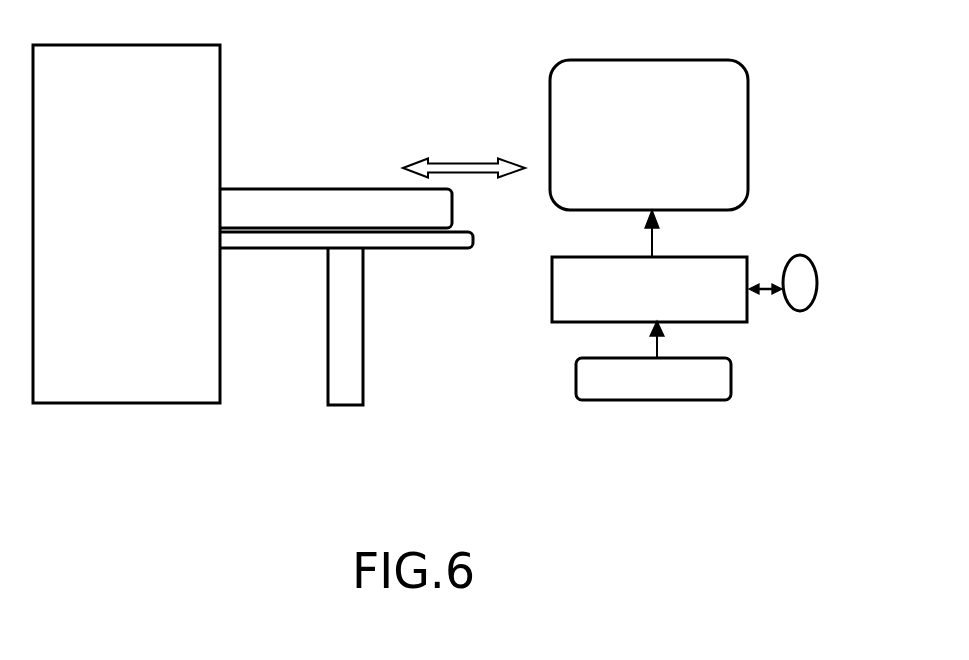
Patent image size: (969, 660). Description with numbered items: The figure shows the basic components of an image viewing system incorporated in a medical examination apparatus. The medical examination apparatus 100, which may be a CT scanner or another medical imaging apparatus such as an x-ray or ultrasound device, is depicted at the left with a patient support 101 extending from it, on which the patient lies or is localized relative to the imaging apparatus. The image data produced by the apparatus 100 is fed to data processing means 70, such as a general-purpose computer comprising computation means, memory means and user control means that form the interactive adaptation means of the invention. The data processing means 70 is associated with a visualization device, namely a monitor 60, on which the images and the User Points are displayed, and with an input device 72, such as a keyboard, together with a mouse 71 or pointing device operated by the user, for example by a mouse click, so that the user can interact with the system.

The medical examination apparatus 100 is at (116, 390).
The patient table 101 is at (329, 200).
The monitor 60 is at (565, 97).
The data processing means 70 is at (565, 290).
The mouse 71 is at (798, 297).
The keyboard 72 is at (592, 376).